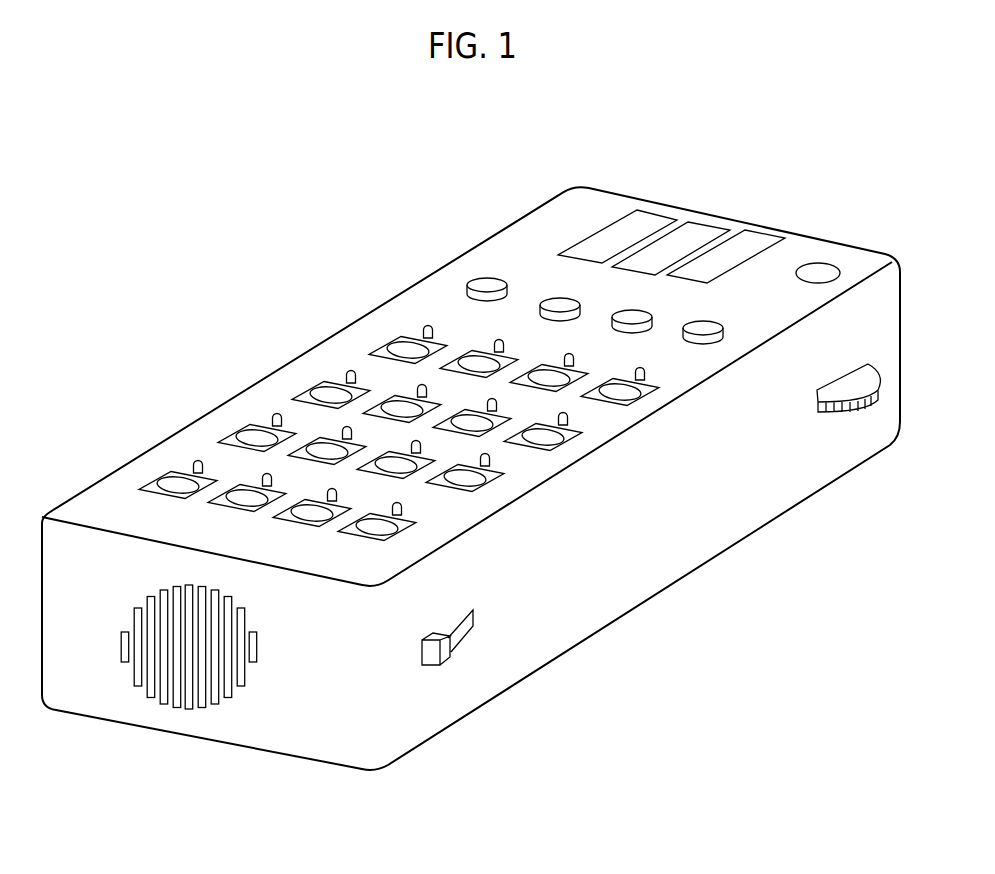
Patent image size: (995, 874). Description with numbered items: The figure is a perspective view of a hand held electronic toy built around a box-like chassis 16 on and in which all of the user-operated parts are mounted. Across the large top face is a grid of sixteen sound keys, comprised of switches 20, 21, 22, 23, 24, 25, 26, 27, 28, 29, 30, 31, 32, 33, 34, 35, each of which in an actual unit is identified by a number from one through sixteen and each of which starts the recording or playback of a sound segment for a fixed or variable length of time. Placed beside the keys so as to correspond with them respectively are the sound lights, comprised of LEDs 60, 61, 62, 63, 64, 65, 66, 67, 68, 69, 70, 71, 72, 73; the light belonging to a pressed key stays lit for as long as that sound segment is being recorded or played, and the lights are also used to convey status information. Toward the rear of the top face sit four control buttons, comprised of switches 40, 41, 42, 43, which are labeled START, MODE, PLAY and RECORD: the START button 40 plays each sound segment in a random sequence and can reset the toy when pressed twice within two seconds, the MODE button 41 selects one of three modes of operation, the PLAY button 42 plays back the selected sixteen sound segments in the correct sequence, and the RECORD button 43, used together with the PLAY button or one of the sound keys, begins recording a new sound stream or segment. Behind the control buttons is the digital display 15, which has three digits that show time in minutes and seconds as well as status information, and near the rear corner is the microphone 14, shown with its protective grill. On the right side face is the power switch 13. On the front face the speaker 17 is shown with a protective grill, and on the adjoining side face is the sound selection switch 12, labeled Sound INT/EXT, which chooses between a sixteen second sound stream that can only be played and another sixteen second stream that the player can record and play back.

The sound selection switch 12 is at (448, 662).
The power switch 13 is at (857, 373).
The microphone 14 is at (828, 272).
The digital display 15 is at (750, 240).
The chassis 16 is at (605, 595).
The speaker 17 is at (230, 677).
The sound key switch 20 is at (407, 349).
The sound key switch 21 is at (478, 363).
The sound key switch 22 is at (549, 377).
The sound key switch 23 is at (620, 391).
The sound key switch 24 is at (330, 394).
The sound key switch 25 is at (402, 408).
The sound key switch 26 is at (472, 422).
The sound key switch 27 is at (543, 436).
The sound key switch 28 is at (257, 437).
The sound key switch 29 is at (327, 450).
The sound key switch 30 is at (396, 464).
The sound key switch 31 is at (465, 477).
The sound key switch 32 is at (247, 498).
The sound key switch 33 is at (178, 485).
The sound key switch 34 is at (312, 513).
The sound key switch 35 is at (377, 527).
The control button switch 40 is at (487, 288).
The control button switch 41 is at (565, 306).
The control button switch 42 is at (632, 318).
The control button switch 43 is at (703, 330).
The sound light LED 60 is at (428, 326).
The sound light LED 61 is at (499, 340).
The sound light LED 62 is at (569, 354).
The sound light LED 63 is at (640, 368).
The sound light LED 64 is at (351, 371).
The sound light LED 65 is at (422, 385).
The sound light LED 66 is at (492, 399).
The sound light LED 67 is at (563, 413).
The sound light LED 68 is at (277, 414).
The sound light LED 69 is at (347, 427).
The sound light LED 70 is at (416, 441).
The sound light LED 71 is at (485, 454).
The sound light LED 72 is at (198, 461).
The sound light LED 73 is at (267, 474).